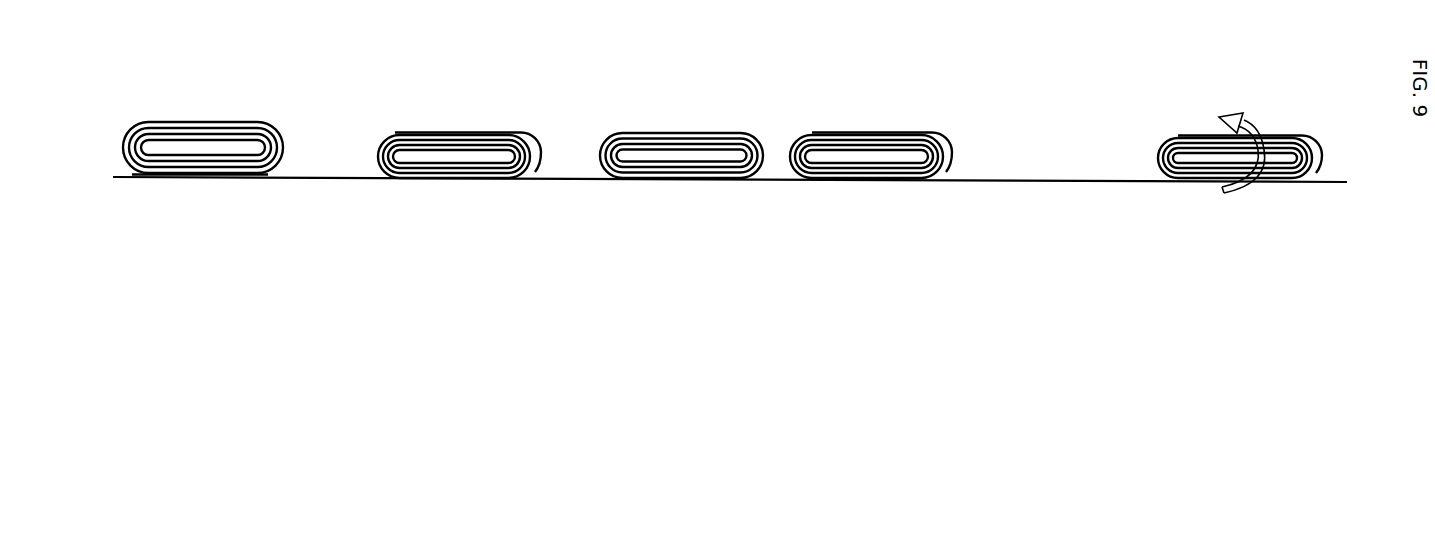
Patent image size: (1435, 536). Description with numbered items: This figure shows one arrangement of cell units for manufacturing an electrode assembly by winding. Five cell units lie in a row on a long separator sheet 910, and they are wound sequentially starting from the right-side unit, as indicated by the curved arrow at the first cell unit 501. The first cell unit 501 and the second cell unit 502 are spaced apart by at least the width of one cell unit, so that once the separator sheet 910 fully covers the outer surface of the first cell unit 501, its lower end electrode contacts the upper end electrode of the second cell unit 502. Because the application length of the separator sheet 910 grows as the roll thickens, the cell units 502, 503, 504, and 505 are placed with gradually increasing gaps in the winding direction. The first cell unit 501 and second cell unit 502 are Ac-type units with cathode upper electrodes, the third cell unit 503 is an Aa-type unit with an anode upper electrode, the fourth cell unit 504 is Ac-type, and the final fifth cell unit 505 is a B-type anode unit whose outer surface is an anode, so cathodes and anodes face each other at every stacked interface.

The separator sheet 910 is at (1032, 182).
The first cell unit 501 is at (1262, 148).
The second cell unit 502 is at (852, 133).
The third cell unit 503 is at (657, 133).
The fourth cell unit 504 is at (437, 133).
The fifth cell unit 505 is at (178, 122).